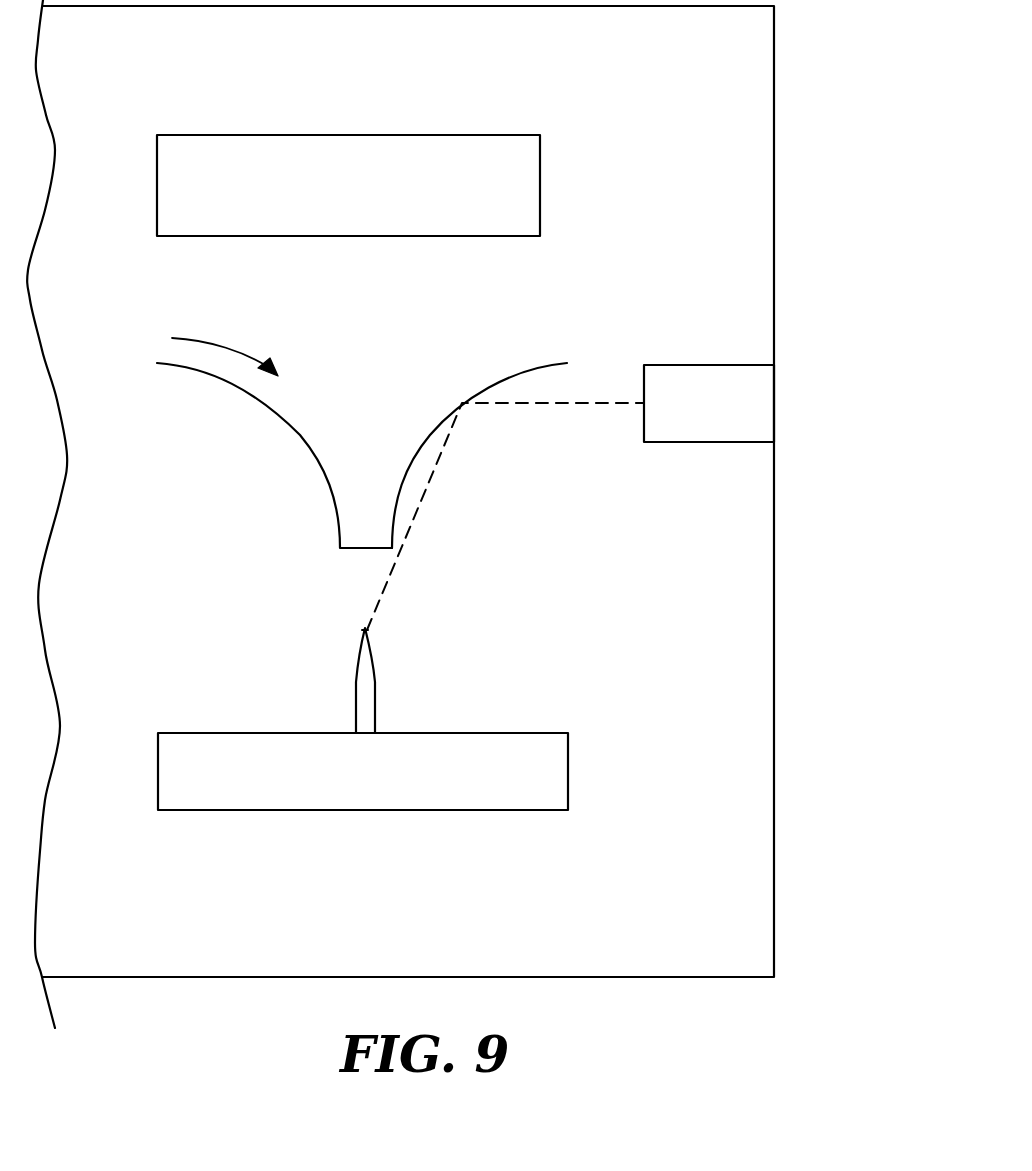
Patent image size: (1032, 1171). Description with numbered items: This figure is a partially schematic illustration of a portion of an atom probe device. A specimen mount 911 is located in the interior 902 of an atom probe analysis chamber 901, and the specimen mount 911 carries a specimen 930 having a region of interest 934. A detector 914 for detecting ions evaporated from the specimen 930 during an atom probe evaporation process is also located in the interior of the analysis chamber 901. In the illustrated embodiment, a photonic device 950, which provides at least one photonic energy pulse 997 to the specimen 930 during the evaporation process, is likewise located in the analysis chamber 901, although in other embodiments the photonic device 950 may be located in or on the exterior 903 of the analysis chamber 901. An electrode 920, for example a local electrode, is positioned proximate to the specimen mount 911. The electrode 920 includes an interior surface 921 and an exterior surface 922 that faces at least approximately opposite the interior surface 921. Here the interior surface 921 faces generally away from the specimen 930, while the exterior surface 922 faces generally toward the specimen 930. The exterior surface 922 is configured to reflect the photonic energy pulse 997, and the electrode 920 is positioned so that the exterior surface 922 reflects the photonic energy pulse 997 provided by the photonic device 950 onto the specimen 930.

The atom probe analysis chamber 901 is at (747, 862).
The interior 902 is at (730, 709).
The exterior 903 is at (934, 709).
The specimen mount 911 is at (320, 810).
The detector 914 is at (467, 135).
The electrode 920 is at (195, 350).
The interior surface 921 is at (307, 440).
The exterior surface 922 is at (260, 398).
The specimen 930 is at (376, 695).
The region of interest 934 is at (352, 617).
The photonic device 950 is at (733, 365).
The photonic energy pulse 997 is at (437, 462).